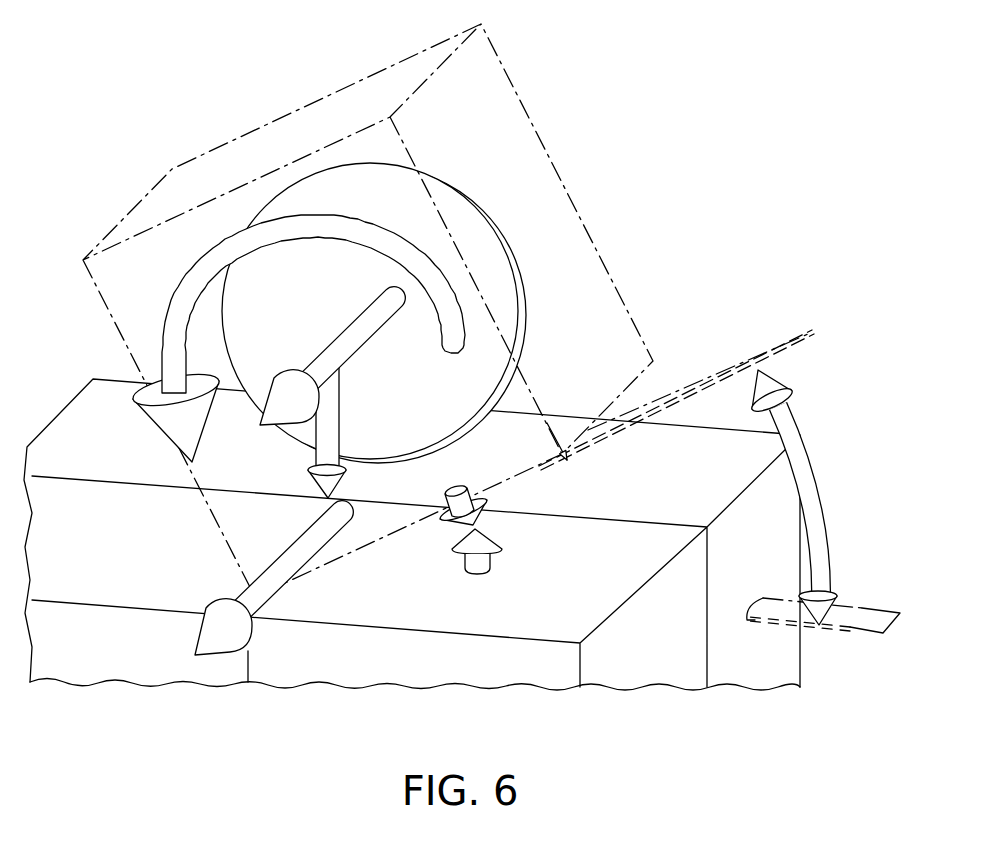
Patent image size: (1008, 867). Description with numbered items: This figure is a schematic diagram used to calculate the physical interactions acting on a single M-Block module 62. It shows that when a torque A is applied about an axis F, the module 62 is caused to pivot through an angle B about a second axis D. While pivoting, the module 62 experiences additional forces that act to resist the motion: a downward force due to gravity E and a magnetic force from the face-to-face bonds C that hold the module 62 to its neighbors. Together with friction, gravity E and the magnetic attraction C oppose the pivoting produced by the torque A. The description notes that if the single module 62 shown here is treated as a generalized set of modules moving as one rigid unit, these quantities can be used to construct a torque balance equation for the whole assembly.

The module 62 is at (258, 131).
The torque A is at (288, 338).
The angle B is at (796, 497).
The magnetic force from the face-to-face bonds C is at (484, 529).
The axis D is at (256, 597).
The downward force due to gravity E is at (338, 430).
The axis F is at (318, 363).